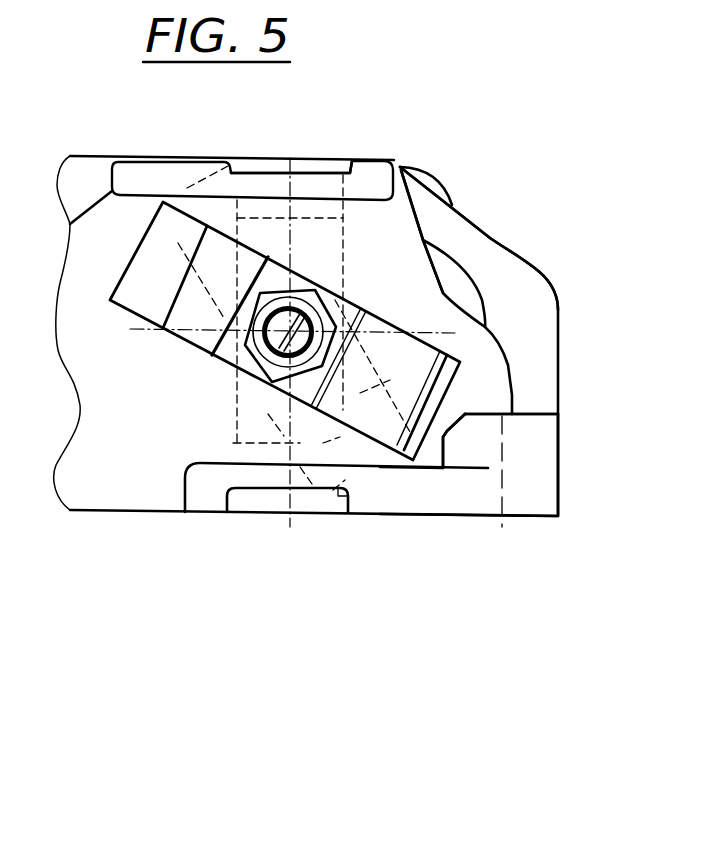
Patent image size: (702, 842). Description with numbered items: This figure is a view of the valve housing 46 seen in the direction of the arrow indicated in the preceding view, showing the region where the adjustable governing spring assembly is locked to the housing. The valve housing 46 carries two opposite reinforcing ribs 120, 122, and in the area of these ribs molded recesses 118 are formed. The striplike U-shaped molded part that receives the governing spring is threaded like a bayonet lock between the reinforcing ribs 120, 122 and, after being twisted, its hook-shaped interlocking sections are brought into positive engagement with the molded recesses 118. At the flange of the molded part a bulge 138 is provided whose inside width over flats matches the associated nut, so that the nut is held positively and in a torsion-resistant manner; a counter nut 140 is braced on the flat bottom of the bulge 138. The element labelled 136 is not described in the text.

The valve housing 46 is at (406, 152).
The molded recesses 118 is at (330, 148).
The reinforcing rib 120 is at (158, 170).
The reinforcing rib 122 is at (425, 500).
The clamping screw 136 is at (262, 378).
The bulge 138 is at (230, 361).
The counter nut 140 is at (323, 290).